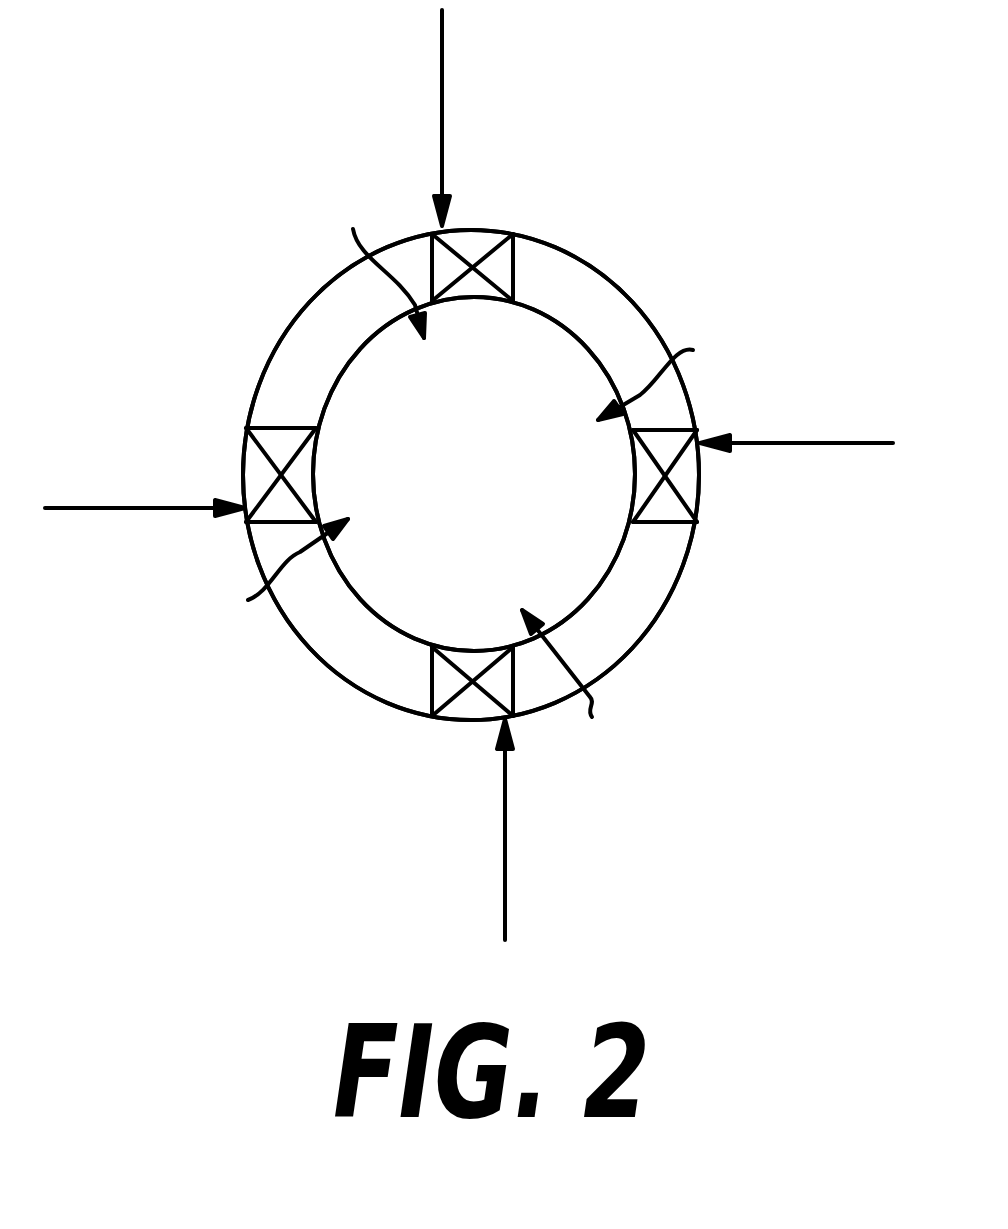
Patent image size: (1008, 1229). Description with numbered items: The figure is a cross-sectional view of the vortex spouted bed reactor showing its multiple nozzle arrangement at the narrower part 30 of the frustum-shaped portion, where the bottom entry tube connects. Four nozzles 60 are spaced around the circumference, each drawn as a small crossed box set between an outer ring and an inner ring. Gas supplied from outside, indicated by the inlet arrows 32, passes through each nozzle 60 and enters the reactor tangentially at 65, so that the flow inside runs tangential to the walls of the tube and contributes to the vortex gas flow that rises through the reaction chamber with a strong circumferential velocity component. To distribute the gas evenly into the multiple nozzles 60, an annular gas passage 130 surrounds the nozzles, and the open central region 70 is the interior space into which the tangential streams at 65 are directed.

The narrower part 30 is at (650, 664).
The inlet gas streams 32 is at (443, 43).
The nozzles 60 is at (491, 226).
The tangential gas entry 65 is at (471, 480).
The central chamber 70 is at (499, 503).
The gas passage 130 is at (607, 307).